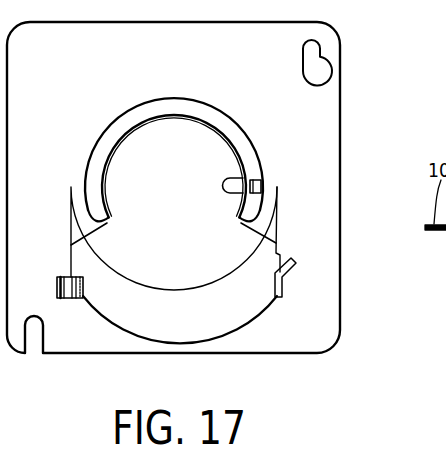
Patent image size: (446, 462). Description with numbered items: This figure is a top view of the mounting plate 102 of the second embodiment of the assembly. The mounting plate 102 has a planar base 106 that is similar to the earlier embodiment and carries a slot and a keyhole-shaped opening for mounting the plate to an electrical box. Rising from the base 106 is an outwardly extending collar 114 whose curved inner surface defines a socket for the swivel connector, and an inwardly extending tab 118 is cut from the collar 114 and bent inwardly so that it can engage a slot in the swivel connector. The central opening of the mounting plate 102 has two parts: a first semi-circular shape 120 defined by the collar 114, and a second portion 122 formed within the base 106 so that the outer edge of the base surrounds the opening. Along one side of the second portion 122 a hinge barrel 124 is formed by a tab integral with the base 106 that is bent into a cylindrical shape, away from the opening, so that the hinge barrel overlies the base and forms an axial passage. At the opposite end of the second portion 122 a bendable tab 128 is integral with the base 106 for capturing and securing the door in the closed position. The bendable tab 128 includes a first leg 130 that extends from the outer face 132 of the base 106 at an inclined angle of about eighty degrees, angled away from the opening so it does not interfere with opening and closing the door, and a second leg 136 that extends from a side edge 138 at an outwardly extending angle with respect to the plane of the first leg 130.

The mounting plate 102 is at (212, 208).
The planar base 106 is at (340, 135).
The outwardly extending collar 114 is at (156, 132).
The inwardly extending tab 118 is at (222, 186).
The first semi-circular shape 120 is at (133, 163).
The second portion 122 is at (176, 316).
The hinge barrel 124 is at (83, 292).
The bendable tab 128 is at (299, 255).
The first leg 130 is at (276, 297).
The outer face 132 is at (320, 327).
The second leg 136 is at (293, 283).
The side edge 138 is at (275, 277).